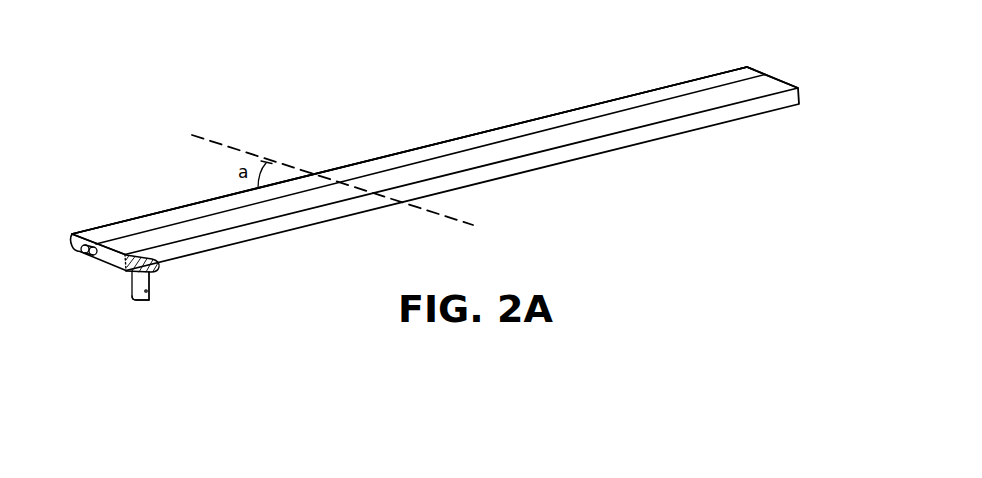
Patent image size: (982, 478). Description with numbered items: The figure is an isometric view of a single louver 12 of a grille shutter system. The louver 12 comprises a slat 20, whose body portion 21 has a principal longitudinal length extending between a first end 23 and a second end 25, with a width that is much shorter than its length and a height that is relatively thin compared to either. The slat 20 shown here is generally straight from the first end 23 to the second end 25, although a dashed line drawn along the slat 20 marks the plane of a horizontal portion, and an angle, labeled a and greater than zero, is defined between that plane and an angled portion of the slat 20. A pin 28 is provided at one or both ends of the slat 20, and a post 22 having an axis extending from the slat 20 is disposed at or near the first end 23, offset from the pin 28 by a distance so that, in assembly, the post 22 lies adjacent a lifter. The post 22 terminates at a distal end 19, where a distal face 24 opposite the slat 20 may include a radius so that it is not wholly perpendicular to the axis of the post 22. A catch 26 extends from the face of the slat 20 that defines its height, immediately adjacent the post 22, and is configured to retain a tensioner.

The louver 12 is at (638, 144).
The distal end 19 is at (118, 303).
The slat 20 is at (403, 125).
The body portion 21 is at (570, 103).
The post 22 is at (131, 279).
The first end 23 is at (63, 216).
The distal face 24 is at (136, 297).
The second end 25 is at (714, 49).
The catch 26 is at (155, 258).
The pin 28 is at (738, 62).